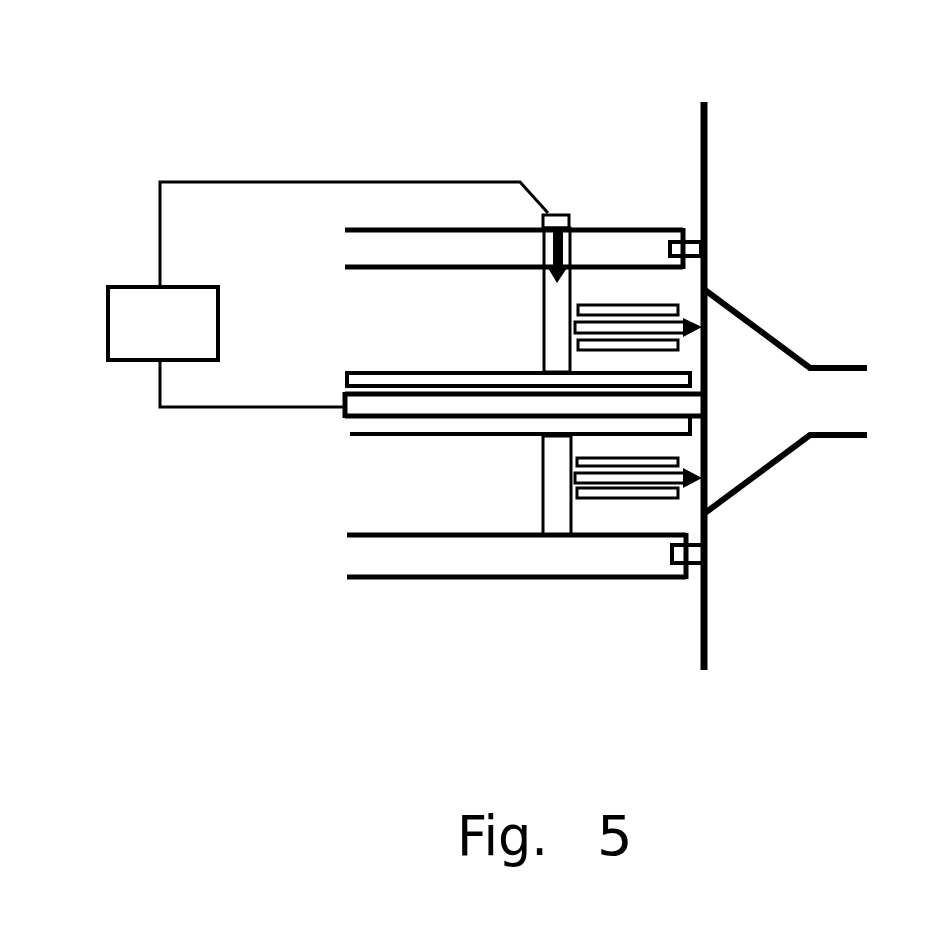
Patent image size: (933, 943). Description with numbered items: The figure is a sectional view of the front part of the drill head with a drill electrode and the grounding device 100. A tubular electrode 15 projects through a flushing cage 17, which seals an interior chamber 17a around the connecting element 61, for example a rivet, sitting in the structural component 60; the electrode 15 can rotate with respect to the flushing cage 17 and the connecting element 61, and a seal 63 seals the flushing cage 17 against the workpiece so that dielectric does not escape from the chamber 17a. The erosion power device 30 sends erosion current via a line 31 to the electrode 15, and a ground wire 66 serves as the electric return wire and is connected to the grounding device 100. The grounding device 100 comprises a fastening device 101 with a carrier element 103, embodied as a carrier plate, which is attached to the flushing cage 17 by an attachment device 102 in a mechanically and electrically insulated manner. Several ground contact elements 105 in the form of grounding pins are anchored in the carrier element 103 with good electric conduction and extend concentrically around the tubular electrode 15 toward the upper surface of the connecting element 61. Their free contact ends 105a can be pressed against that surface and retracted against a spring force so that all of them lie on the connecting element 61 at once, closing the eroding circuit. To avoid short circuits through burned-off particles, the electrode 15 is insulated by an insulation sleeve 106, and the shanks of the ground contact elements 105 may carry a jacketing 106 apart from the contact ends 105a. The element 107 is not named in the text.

The tubular electrode 15 is at (430, 403).
The flushing cage 17 is at (475, 582).
The interior chamber 17a is at (610, 550).
The erosion power device 30 is at (163, 323).
The line 31 is at (162, 403).
The structural component 60 is at (713, 630).
The connecting element 61 is at (733, 307).
The seal 63 is at (697, 237).
The ground wire 66 is at (160, 217).
The grounding device 100 is at (497, 315).
The fastening device 101 is at (597, 280).
The attachment device 102 is at (556, 212).
The carrier element 103 is at (547, 362).
The ground contact element 105 is at (686, 487).
The free contact end 105a is at (710, 323).
The insulation sleeve 106 is at (348, 437).
The contact 107 is at (677, 348).